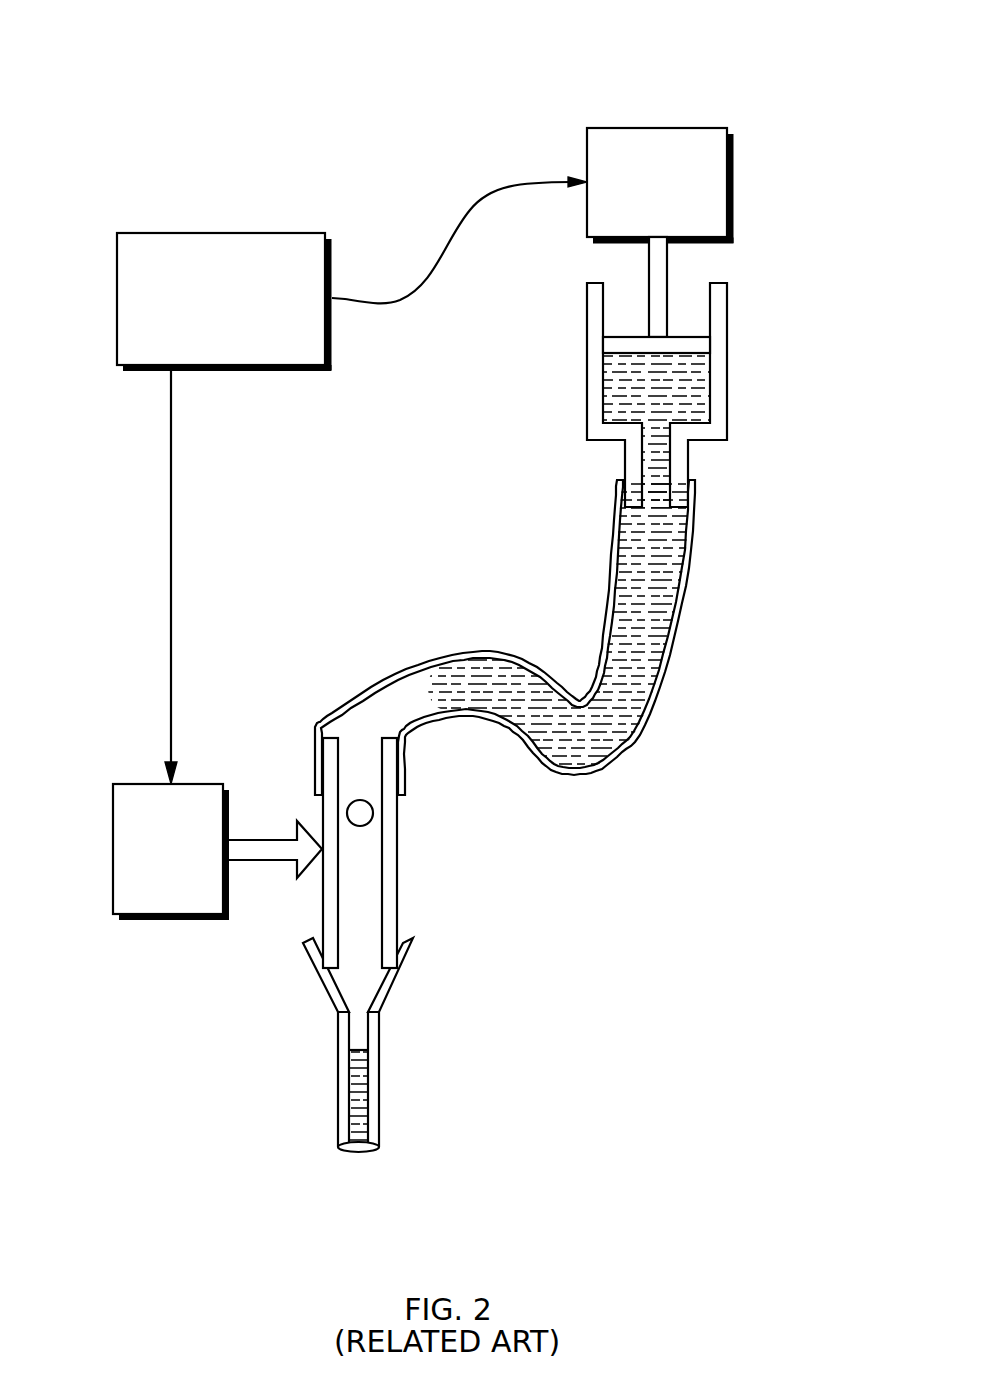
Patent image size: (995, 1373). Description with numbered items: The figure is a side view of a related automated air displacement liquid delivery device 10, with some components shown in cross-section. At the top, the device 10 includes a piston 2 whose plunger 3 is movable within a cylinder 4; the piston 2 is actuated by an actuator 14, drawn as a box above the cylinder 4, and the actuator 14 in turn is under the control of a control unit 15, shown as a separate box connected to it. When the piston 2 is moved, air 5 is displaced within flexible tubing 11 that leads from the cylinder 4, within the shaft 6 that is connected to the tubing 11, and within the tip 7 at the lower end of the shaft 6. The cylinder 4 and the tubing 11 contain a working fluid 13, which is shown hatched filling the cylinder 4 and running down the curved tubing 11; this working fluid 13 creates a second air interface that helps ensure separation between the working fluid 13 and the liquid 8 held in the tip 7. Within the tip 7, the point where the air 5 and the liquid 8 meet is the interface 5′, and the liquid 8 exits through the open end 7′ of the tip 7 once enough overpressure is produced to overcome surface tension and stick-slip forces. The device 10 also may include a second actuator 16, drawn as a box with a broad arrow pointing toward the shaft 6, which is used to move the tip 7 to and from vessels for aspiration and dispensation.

The automated air displacement liquid delivery device 10 is at (76, 25).
The piston 2 is at (664, 265).
The plunger 3 is at (700, 343).
The cylinder 4 is at (728, 395).
The air 5 is at (362, 812).
The interface 5′ is at (357, 1047).
The shaft 6 is at (398, 895).
The tip 7 is at (340, 1080).
The open end 7′ is at (351, 1011).
The liquid 8 is at (360, 1090).
The flexible tubing 11 is at (658, 692).
The working fluid 13 is at (643, 618).
The actuator 14 is at (673, 193).
The control unit 15 is at (206, 313).
The second actuator 16 is at (184, 863).